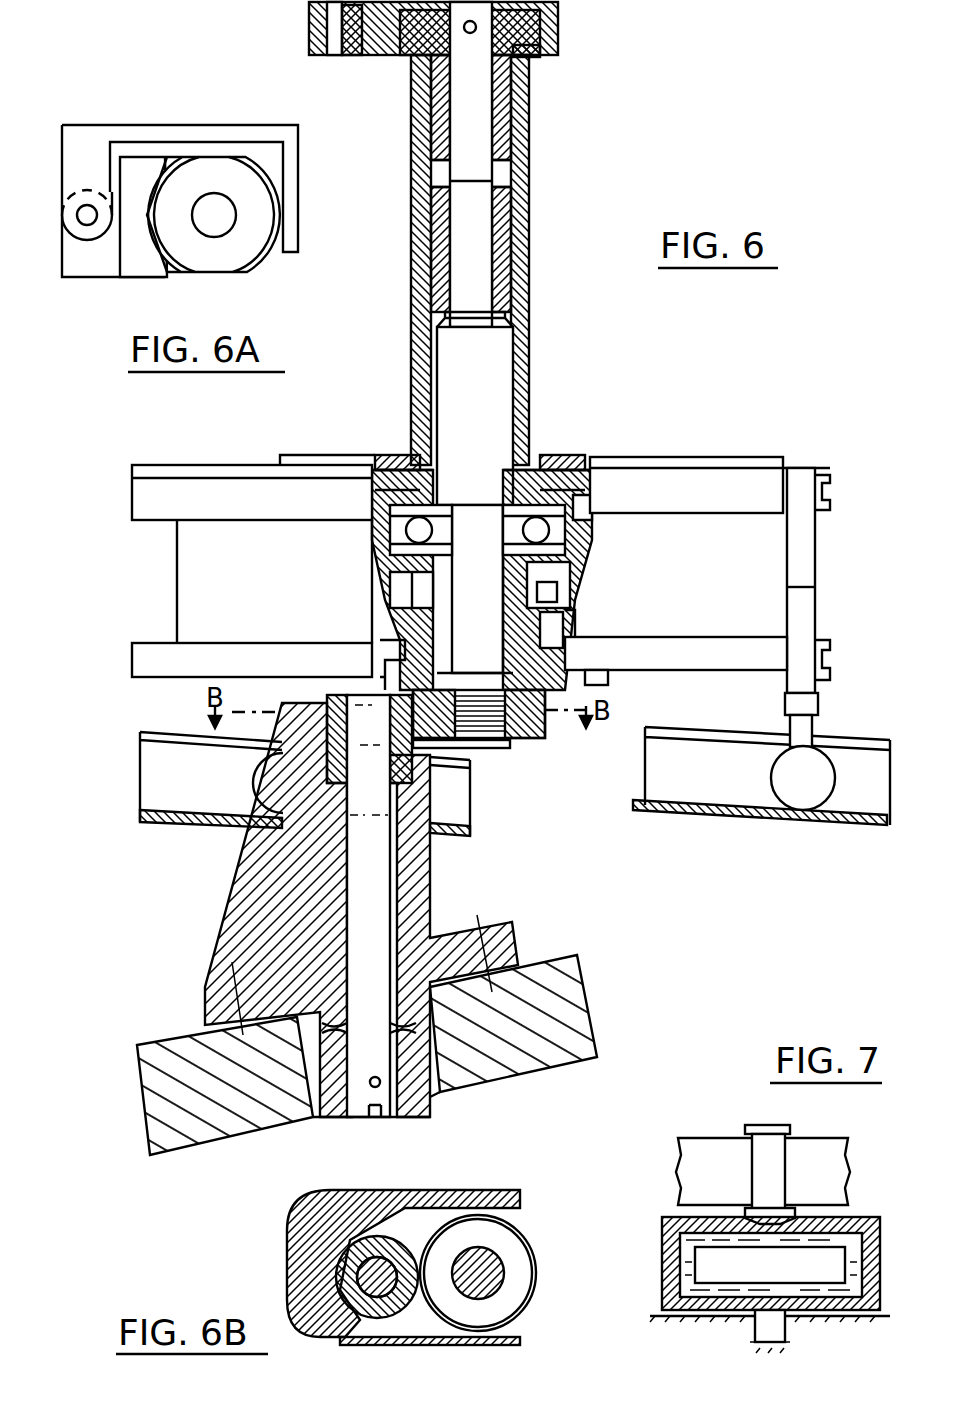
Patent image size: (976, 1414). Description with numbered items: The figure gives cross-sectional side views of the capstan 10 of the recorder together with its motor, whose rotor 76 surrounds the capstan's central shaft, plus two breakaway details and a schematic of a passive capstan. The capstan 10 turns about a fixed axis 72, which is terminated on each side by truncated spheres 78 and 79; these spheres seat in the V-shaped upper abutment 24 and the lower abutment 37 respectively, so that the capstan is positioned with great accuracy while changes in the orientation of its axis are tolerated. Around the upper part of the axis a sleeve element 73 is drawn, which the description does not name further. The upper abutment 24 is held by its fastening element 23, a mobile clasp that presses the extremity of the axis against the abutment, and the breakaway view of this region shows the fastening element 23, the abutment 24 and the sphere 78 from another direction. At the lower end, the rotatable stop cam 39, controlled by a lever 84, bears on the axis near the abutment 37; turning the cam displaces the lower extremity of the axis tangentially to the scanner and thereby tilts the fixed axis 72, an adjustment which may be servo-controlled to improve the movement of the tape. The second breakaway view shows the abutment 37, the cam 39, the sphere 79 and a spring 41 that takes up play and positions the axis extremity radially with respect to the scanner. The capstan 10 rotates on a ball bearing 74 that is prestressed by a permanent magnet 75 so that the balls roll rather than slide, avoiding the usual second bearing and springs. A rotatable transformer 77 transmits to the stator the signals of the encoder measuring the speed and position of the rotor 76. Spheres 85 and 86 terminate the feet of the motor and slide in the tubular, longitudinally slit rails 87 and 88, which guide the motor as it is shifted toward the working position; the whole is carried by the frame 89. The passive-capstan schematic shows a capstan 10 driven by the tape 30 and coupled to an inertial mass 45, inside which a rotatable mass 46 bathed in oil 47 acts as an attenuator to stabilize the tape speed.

In FIG. 6, the capstan 10 is at (548, 240).
In FIG. 7, the capstan 10 is at (668, 1205).
In FIG. 6, the fastening element 23 is at (556, 20).
In FIG. 6A, the fastening element 23 is at (207, 130).
In FIG. 6, the upper abutment 24 is at (386, 50).
In FIG. 6A, the upper abutment 24 is at (140, 255).
In FIG. 7, the tape 30 is at (700, 1150).
In FIG. 6, the lower abutment 37 is at (284, 900).
In FIG. 6B, the lower abutment 37 is at (295, 1278).
In FIG. 6, the rotatable stop cam 39 is at (335, 695).
In FIG. 6B, the rotatable stop cam 39 is at (345, 1322).
In FIG. 6B, the spring for taking up play 41 is at (465, 1345).
In FIG. 7, the inertial mass 45 is at (872, 1258).
In FIG. 7, the rotatable mass 46 is at (810, 1262).
In FIG. 7, the oil 47 is at (853, 1240).
In FIG. 6, the fixed axis 72 is at (490, 360).
In FIG. 6B, the fixed axis 72 is at (498, 1260).
In FIG. 6, the sleeve bushing 73 is at (512, 133).
In FIG. 6, the ball bearing 74 is at (540, 530).
In FIG. 6, the permanent magnet 75 is at (562, 462).
In FIG. 6, the rotor 76 is at (583, 500).
In FIG. 6, the rotatable transformer 77 is at (560, 592).
In FIG. 6, the truncated sphere 78 is at (530, 50).
In FIG. 6A, the truncated sphere 78 is at (217, 250).
In FIG. 6, the truncated sphere 79 is at (530, 738).
In FIG. 6B, the truncated sphere 79 is at (520, 1275).
In FIG. 6, the lever 84 is at (432, 1110).
In FIG. 6, the sphere 85 is at (803, 790).
In FIG. 6, the sphere 86 is at (268, 805).
In FIG. 6, the rail 87 is at (735, 785).
In FIG. 6, the rail 88 is at (160, 783).
In FIG. 6, the frame 89 is at (180, 1055).